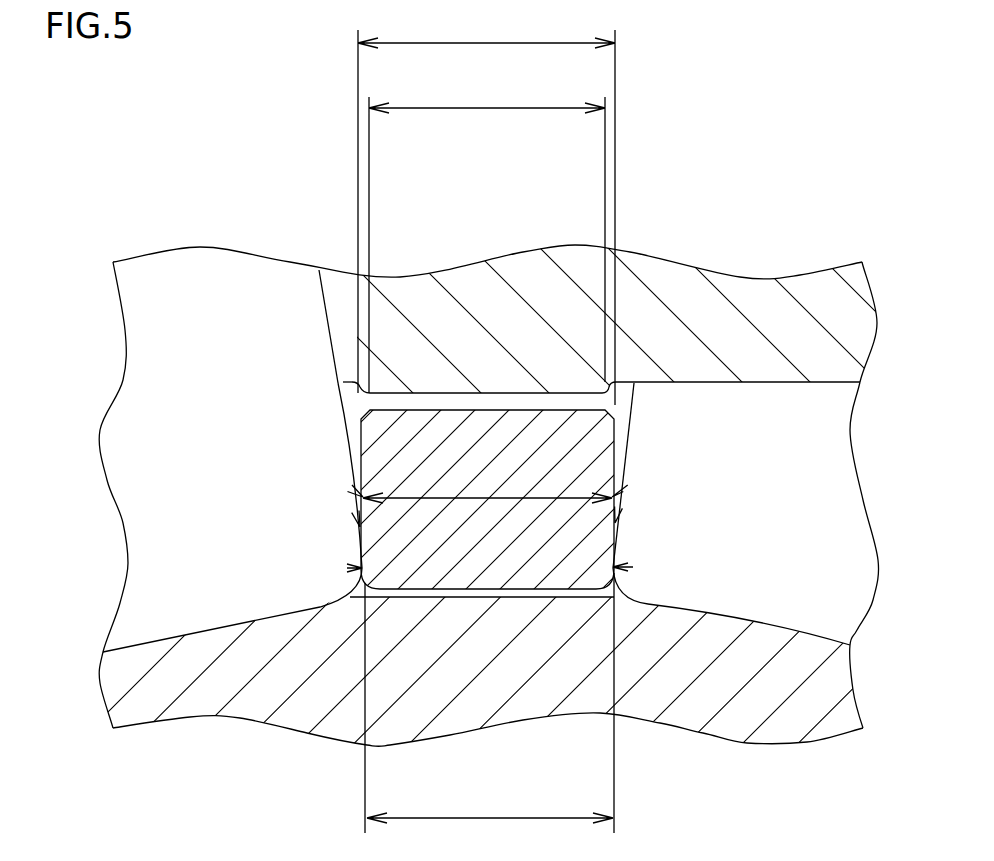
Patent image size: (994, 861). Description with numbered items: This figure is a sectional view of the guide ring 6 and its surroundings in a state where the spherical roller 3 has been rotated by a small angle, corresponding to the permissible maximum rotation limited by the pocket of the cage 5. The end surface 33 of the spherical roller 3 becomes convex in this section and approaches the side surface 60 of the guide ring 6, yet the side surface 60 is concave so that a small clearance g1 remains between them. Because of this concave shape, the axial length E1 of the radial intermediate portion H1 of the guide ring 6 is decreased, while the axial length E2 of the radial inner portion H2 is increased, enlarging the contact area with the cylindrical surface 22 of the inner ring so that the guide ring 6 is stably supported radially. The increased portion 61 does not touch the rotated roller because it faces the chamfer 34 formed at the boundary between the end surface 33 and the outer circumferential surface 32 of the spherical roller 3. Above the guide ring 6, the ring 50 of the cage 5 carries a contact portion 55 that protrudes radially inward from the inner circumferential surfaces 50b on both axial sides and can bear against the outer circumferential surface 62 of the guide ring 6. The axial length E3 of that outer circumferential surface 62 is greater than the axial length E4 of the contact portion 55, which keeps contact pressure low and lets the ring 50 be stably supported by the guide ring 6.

The spherical roller 3 is at (243, 602).
The cage 5 is at (782, 383).
The guide ring 6 is at (640, 452).
The cylindrical surface 22 is at (418, 600).
The outer circumferential surface 32 is at (170, 638).
The end surface 33 is at (325, 305).
The chamfer 34 is at (353, 590).
The ring 50 is at (412, 298).
The inner circumferential surface 50b is at (348, 386).
The contact portion 55 is at (516, 386).
The side surface 60 is at (343, 448).
The increased portion 61 is at (363, 560).
The outer circumferential surface 62 is at (462, 410).
The axial length of radial intermediate portion E1 is at (487, 485).
The axial length of radial inner portion E2 is at (489, 703).
The axial length of outer circumferential surface E3 is at (486, 209).
The axial length of contact portion E4 is at (487, 235).
The radial intermediate portion H1 is at (363, 497).
The radial inner portion H2 is at (347, 567).
The clearance g1 is at (360, 527).